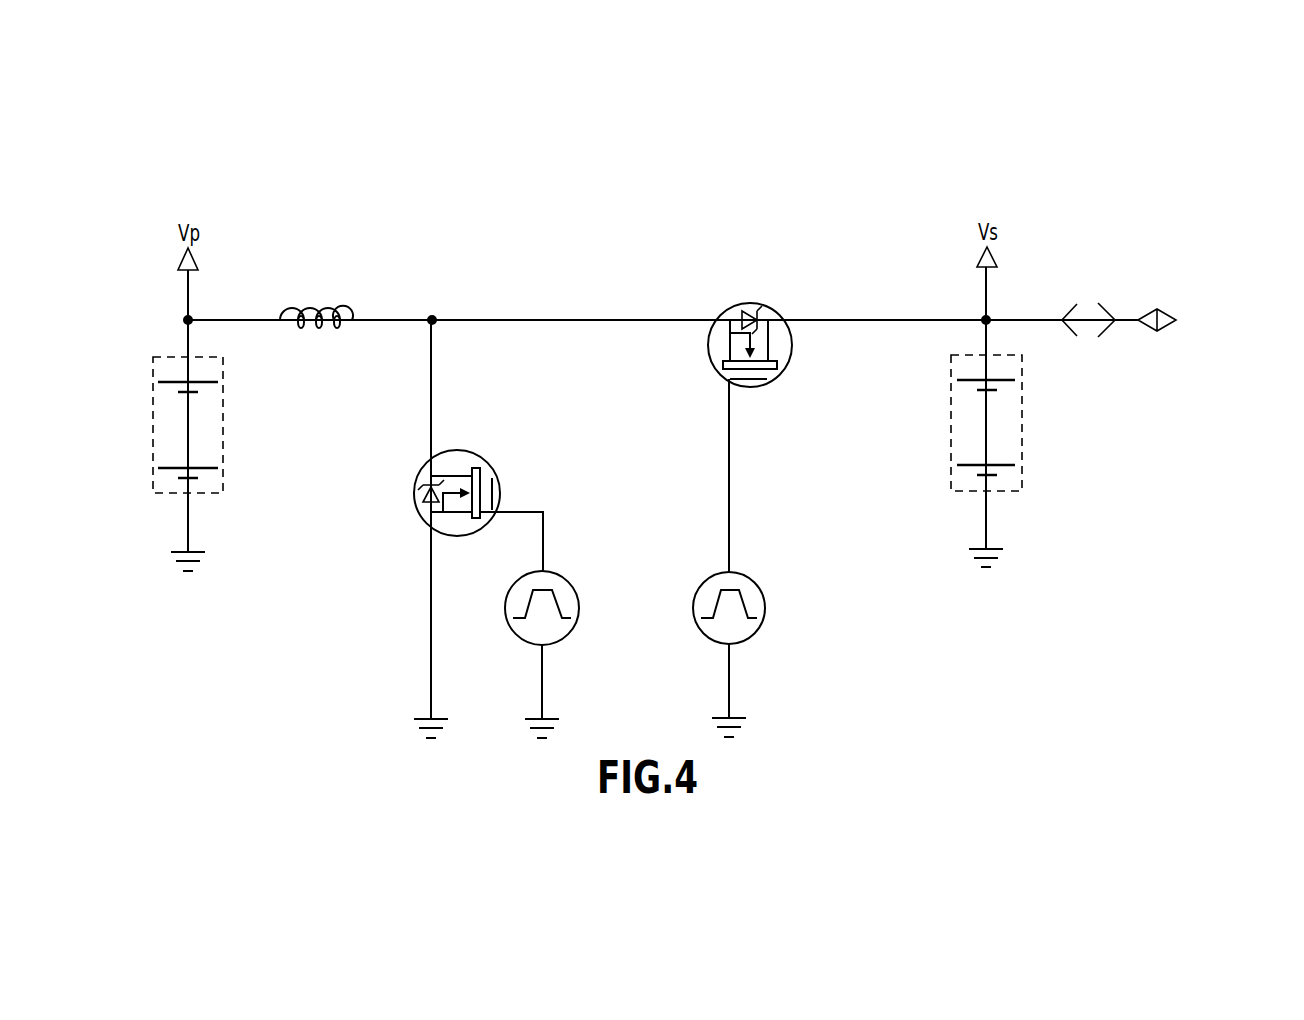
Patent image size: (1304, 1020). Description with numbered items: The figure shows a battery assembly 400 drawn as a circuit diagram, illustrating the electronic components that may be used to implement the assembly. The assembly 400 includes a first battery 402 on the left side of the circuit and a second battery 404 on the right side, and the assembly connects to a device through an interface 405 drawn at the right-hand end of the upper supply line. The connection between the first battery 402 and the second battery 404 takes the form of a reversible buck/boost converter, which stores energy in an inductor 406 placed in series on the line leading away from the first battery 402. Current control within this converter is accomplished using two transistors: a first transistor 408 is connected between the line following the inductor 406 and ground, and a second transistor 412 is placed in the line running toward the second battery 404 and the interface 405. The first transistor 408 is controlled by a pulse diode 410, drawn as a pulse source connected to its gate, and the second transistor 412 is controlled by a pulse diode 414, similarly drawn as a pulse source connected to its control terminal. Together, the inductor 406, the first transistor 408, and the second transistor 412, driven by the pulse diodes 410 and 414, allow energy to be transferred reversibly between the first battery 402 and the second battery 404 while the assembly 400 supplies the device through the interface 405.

The battery assembly 400 is at (1028, 173).
The first battery 402 is at (153, 370).
The second battery 404 is at (951, 362).
The interface 405 is at (1121, 323).
The inductor 406 is at (300, 328).
The first transistor 408 is at (431, 462).
The pulse diode 410 is at (516, 584).
The second transistor 412 is at (723, 314).
The pulse diode 414 is at (713, 576).